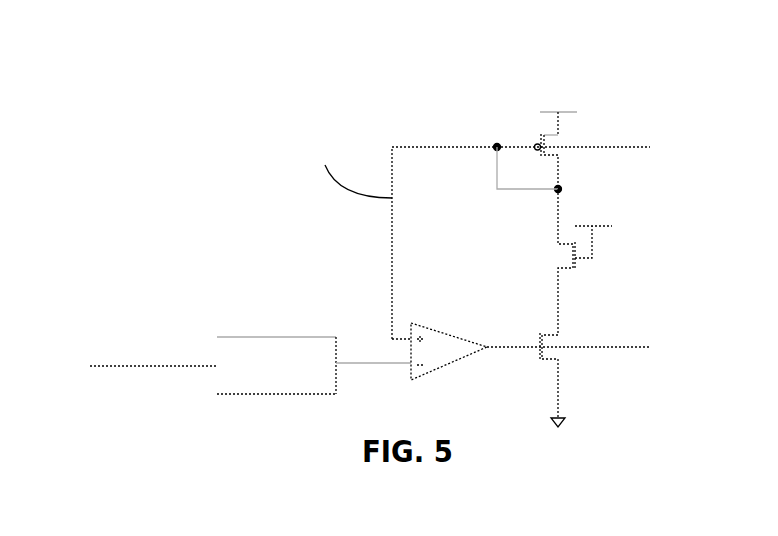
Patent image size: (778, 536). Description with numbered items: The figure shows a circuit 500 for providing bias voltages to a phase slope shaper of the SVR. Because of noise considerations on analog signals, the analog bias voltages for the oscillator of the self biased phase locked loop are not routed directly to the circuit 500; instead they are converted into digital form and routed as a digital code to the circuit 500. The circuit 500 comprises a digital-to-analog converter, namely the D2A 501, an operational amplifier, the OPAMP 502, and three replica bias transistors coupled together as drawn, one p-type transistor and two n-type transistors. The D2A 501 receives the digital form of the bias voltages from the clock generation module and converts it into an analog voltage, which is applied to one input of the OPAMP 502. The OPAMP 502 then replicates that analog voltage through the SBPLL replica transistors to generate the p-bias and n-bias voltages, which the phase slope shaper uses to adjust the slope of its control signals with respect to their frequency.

The circuit 500 is at (390, 50).
The digital-to-analog (D2A) converter 501 is at (257, 394).
The operational amplifier (OPAMP) 502 is at (448, 364).